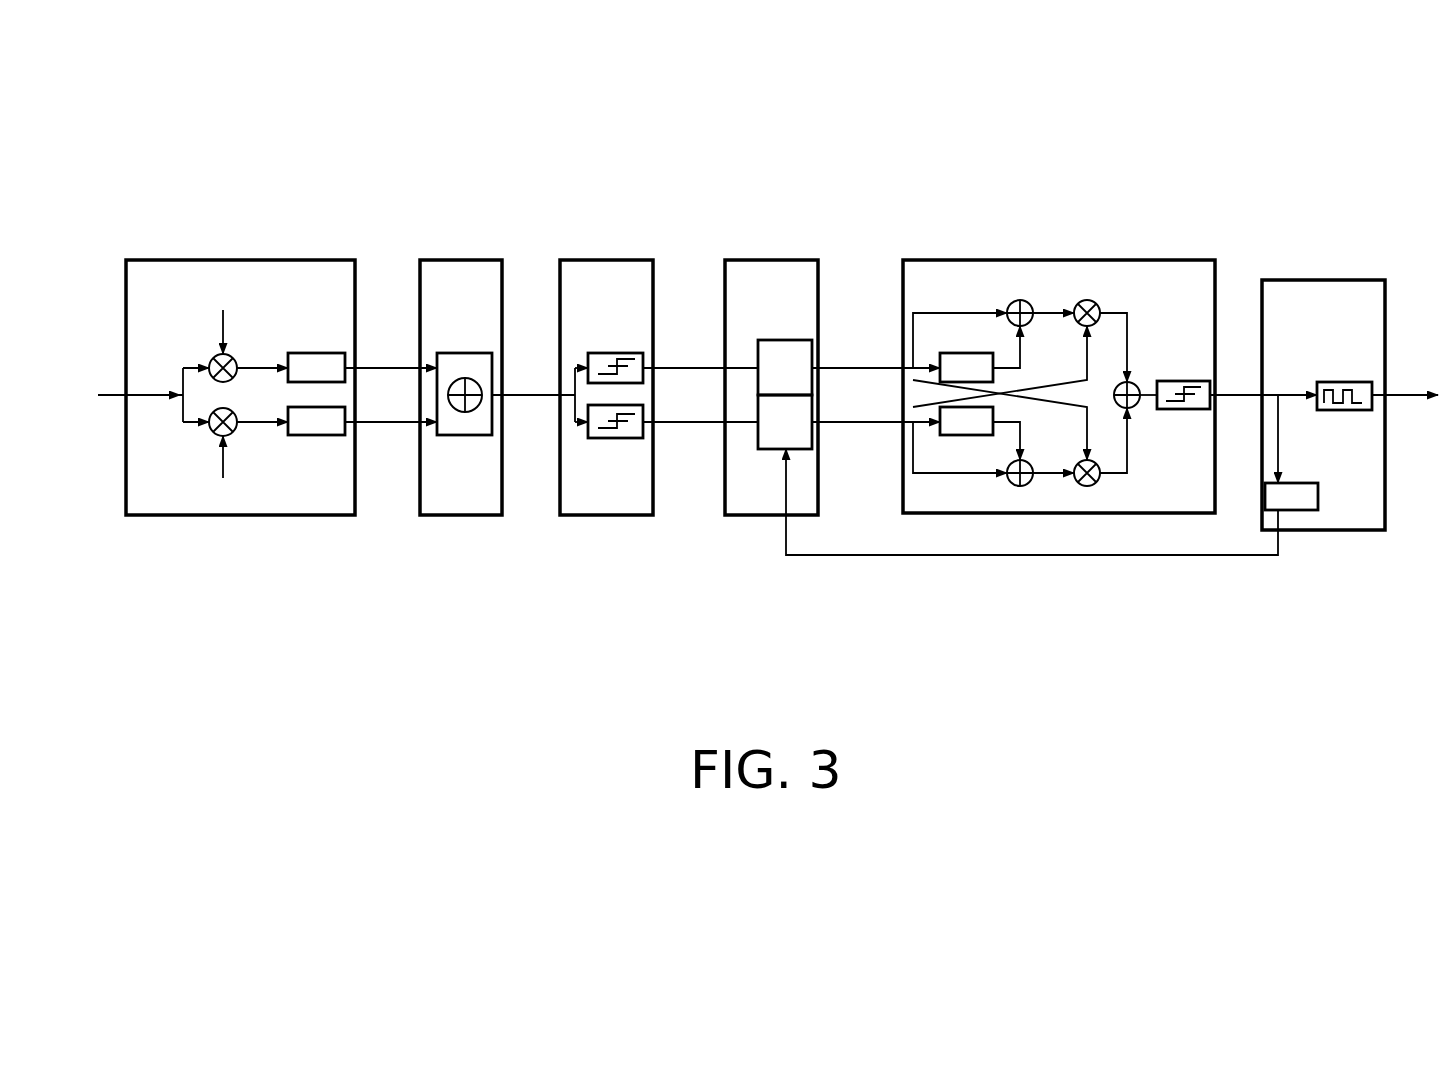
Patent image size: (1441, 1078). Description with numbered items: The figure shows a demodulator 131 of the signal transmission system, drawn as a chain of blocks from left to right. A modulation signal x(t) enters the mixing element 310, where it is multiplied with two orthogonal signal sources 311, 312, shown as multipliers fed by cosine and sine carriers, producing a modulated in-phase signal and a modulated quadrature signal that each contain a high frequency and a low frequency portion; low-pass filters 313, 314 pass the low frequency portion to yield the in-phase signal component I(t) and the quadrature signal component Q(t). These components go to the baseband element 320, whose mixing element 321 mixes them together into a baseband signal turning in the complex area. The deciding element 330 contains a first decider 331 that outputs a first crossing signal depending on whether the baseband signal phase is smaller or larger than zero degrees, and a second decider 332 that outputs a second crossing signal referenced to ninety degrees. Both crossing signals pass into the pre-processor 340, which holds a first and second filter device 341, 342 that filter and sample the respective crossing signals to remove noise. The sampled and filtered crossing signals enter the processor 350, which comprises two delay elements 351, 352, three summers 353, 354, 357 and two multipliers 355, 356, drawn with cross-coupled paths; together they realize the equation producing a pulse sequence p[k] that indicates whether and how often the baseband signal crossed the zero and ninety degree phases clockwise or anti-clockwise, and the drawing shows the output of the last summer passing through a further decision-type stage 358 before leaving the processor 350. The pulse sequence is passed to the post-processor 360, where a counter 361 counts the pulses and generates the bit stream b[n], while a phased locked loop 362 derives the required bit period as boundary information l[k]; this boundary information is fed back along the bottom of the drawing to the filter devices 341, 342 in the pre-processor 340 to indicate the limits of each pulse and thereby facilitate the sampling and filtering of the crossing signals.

The demodulator 131 is at (140, 198).
The mixing element 310 is at (240, 260).
The orthogonal signal source 311 is at (211, 361).
The orthogonal signal source 312 is at (212, 431).
The low-pass filter 313 is at (317, 353).
The low-pass filter 314 is at (316, 435).
The baseband element 320 is at (460, 260).
The mixing element 321 is at (465, 435).
The deciding element 330 is at (606, 260).
The first decider 331 is at (617, 353).
The second decider 332 is at (616, 438).
The pre-processor 340 is at (772, 260).
The first filter device 341 is at (786, 340).
The second filter device 342 is at (768, 449).
The processor 350 is at (1060, 260).
The delay element 351 is at (967, 353).
The delay element 352 is at (967, 435).
The summer 353 is at (1011, 304).
The summer 354 is at (1029, 483).
The multiplier 355 is at (1096, 305).
The multiplier 356 is at (1096, 481).
The summer 357 is at (1139, 383).
The slicer 358 is at (1185, 409).
The post-processor 360 is at (1322, 280).
The counter 361 is at (1341, 382).
The phased locked loop 362 is at (1318, 497).